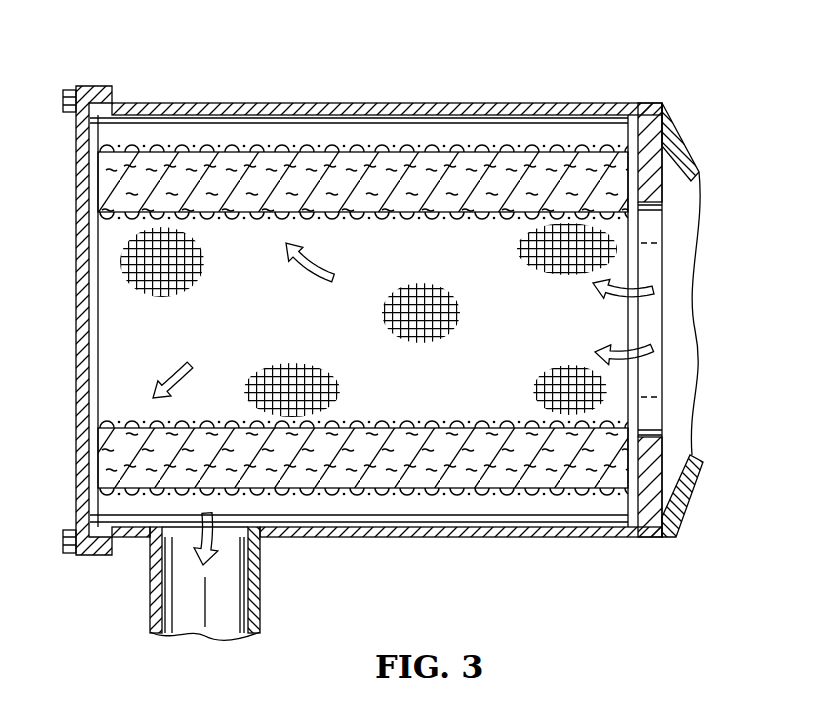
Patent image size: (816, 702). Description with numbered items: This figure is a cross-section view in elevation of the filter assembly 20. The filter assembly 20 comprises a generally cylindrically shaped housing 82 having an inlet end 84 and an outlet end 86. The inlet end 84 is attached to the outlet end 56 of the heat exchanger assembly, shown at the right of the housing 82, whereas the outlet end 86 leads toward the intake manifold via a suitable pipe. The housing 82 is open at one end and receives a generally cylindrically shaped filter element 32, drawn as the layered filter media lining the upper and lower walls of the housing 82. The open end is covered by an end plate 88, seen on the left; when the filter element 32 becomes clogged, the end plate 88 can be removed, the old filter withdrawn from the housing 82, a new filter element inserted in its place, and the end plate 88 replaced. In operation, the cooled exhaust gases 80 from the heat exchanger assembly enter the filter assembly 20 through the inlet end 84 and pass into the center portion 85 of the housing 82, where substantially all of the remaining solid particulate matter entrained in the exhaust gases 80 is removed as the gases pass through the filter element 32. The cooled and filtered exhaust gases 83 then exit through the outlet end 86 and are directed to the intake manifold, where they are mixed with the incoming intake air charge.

The filter assembly 20 is at (170, 58).
The housing 82 is at (270, 102).
The filter element 32 is at (594, 138).
The end plate 88 is at (77, 298).
The cooled exhaust gases 80 is at (652, 316).
The inlet end 84 is at (651, 430).
The outlet end of heat exchanger assembly 56 is at (680, 503).
The outlet end 86 is at (150, 592).
The cooled and filtered exhaust gases 83 is at (213, 562).
The center portion 85 is at (558, 331).